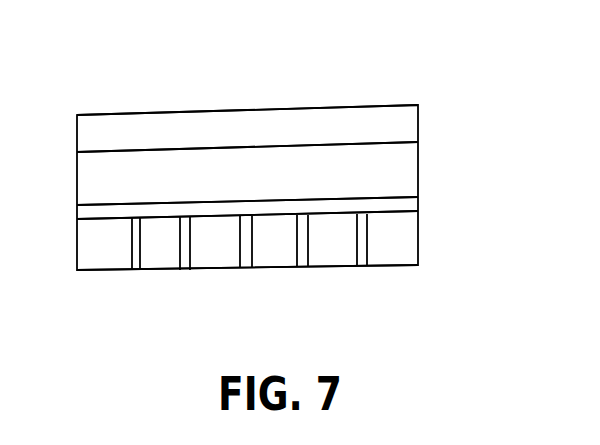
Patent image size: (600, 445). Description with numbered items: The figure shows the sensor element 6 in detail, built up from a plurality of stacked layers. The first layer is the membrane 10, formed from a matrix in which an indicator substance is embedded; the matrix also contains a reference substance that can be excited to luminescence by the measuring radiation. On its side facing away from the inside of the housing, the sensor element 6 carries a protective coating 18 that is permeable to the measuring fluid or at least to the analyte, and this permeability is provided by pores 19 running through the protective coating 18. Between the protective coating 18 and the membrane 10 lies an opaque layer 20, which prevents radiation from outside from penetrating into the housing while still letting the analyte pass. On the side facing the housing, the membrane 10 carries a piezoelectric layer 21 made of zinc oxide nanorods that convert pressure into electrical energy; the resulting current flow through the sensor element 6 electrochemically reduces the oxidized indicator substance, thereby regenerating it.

The sensor element 6 is at (160, 106).
The piezoelectric layer 21 is at (410, 128).
The membrane 10 is at (413, 168).
The opaque layer 20 is at (420, 200).
The protective coating 18 is at (412, 250).
The pores 19 is at (183, 271).